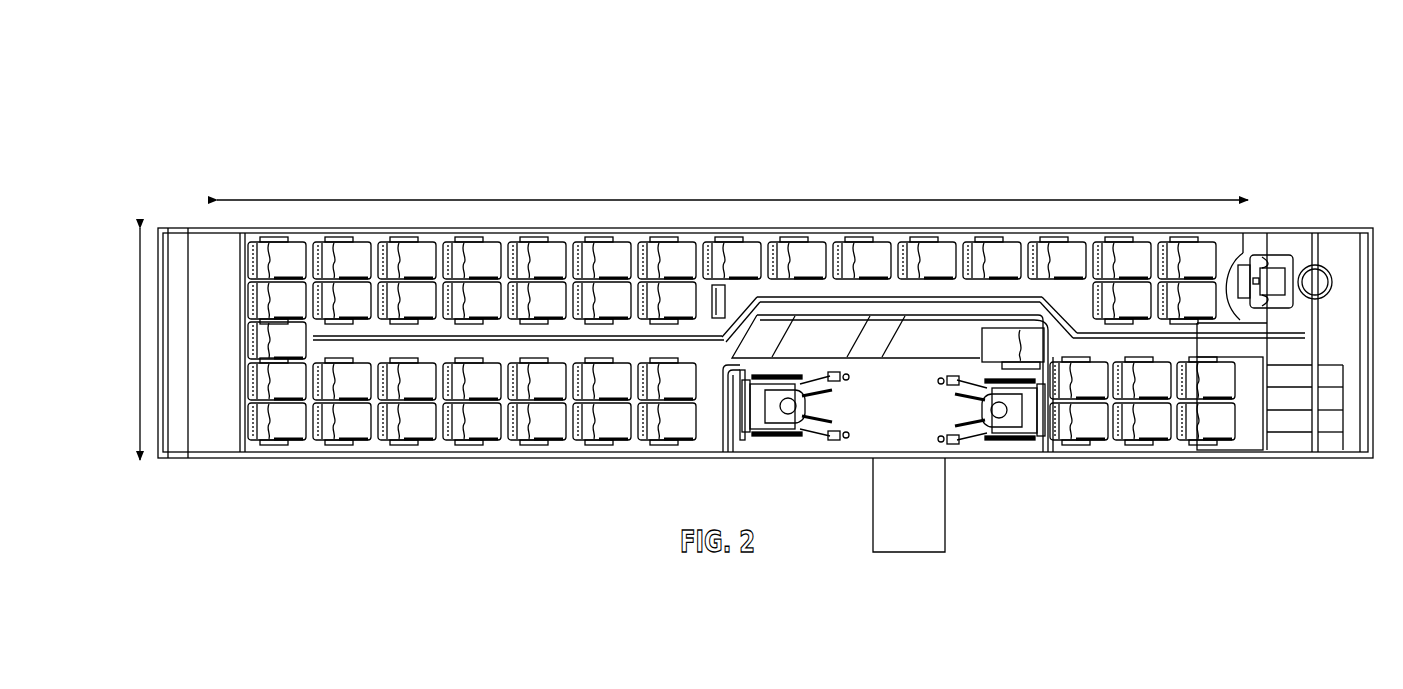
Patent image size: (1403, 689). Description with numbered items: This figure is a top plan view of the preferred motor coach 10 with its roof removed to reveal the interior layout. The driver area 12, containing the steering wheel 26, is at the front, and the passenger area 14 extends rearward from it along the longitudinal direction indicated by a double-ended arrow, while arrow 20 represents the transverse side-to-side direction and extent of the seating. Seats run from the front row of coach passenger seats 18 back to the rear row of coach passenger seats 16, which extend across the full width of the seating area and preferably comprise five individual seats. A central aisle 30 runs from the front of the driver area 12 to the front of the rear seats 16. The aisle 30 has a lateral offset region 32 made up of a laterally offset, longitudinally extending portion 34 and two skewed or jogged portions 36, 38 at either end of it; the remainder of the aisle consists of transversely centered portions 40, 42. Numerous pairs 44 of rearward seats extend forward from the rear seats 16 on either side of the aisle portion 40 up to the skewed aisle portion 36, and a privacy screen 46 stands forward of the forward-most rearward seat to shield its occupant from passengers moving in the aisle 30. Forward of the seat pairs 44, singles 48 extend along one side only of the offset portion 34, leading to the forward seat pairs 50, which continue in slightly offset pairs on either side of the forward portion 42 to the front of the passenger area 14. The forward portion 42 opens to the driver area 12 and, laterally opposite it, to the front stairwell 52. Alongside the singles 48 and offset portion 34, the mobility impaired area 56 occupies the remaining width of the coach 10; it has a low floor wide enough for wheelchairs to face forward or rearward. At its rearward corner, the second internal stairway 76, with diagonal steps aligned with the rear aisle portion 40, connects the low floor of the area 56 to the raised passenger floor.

The motor coach 10 is at (849, 86).
The driver area 12 is at (1289, 250).
The passenger area 14 is at (737, 199).
The rear row of coach passenger seats 16 is at (272, 239).
The front row of coach passenger seats 18 is at (1197, 250).
The transverse direction arrow 20 is at (140, 302).
The steering wheel 26 is at (1326, 274).
The central aisle 30 is at (1100, 334).
The lateral offset region 32 is at (933, 297).
The laterally offset longitudinally extending portion 34 is at (970, 302).
The skewed aisle portion 36 is at (722, 336).
The skewed aisle portion 38 is at (1063, 317).
The transversely centered aisle portion 40 is at (397, 337).
The transversely centered aisle portion 42 is at (1180, 333).
The pairs of rearward seats 44 is at (340, 239).
The privacy screen 46 is at (721, 297).
The singles 48 is at (853, 243).
The forward seat pairs 50 is at (1077, 423).
The front stairwell 52 is at (1293, 426).
The mobility impaired area 56 is at (873, 432).
The second internal stairway 76 is at (821, 353).